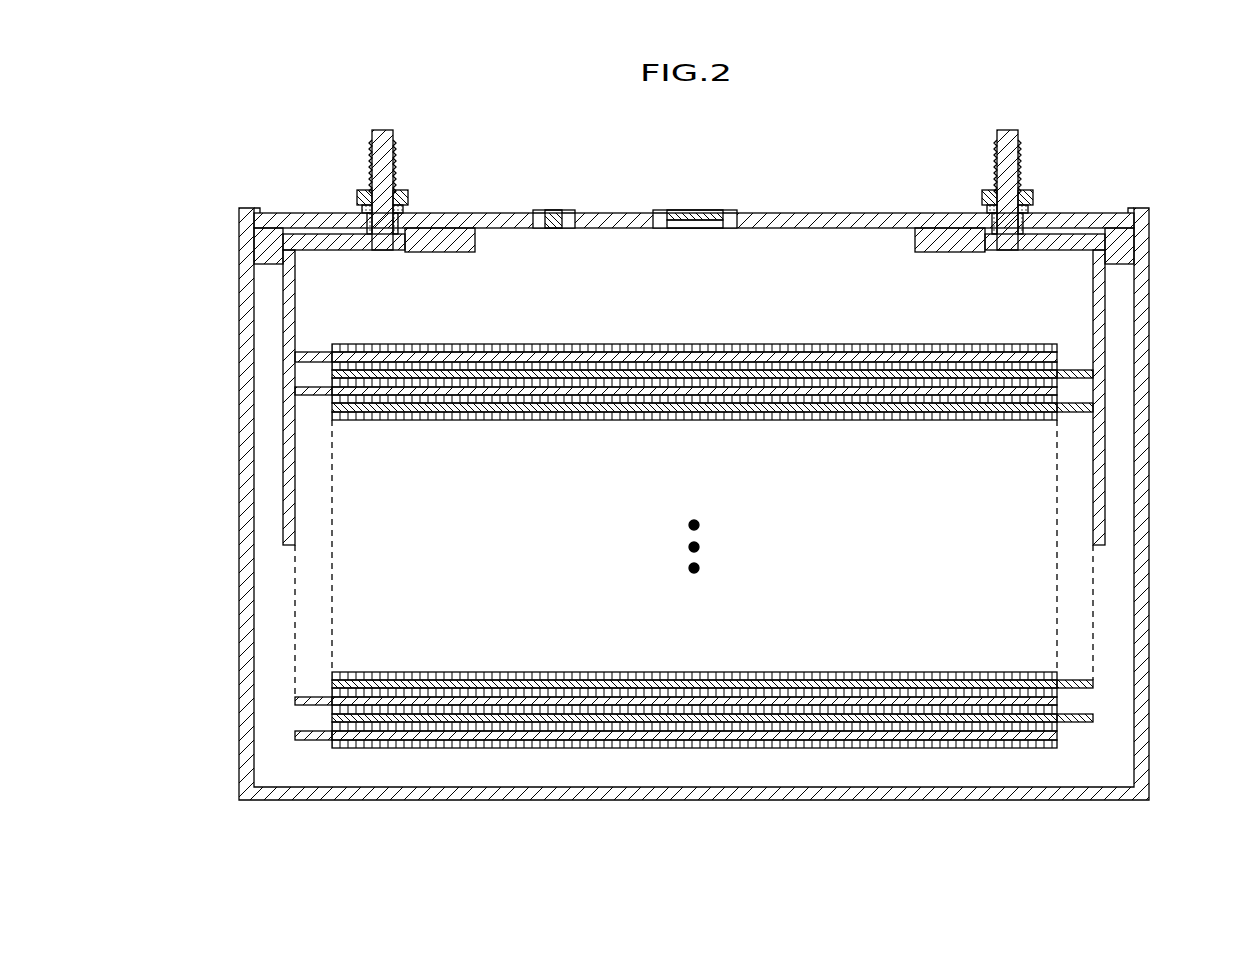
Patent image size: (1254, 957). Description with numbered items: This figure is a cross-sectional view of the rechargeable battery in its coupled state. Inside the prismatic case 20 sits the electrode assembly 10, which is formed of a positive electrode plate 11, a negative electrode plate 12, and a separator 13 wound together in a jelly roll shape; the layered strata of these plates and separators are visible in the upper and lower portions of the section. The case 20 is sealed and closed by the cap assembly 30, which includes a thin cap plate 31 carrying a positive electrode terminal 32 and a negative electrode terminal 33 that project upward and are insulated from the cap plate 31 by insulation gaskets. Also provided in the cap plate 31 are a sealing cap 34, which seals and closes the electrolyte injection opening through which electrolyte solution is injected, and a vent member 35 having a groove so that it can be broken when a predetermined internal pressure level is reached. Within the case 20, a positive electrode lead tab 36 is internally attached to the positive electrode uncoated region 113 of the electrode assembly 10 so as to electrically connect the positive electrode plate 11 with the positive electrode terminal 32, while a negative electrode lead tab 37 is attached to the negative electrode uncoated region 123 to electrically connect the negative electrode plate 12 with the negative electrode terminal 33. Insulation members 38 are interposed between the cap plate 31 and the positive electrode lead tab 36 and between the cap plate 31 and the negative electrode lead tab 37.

The electrode assembly 10 is at (698, 600).
The positive electrode plate 11 is at (420, 742).
The negative electrode plate 12 is at (890, 722).
The separator 13 is at (632, 746).
The positive electrode uncoated region 113 is at (313, 742).
The negative electrode uncoated region 123 is at (1075, 724).
The case 20 is at (1150, 580).
The cap assembly 30 is at (708, 334).
The cap plate 31 is at (772, 213).
The positive electrode terminal 32 is at (372, 151).
The negative electrode terminal 33 is at (1020, 140).
The sealing cap 34 is at (556, 212).
The vent member 35 is at (705, 213).
The positive electrode lead tab 36 is at (284, 330).
The negative electrode lead tab 37 is at (1100, 336).
The insulation members 38 is at (262, 242).